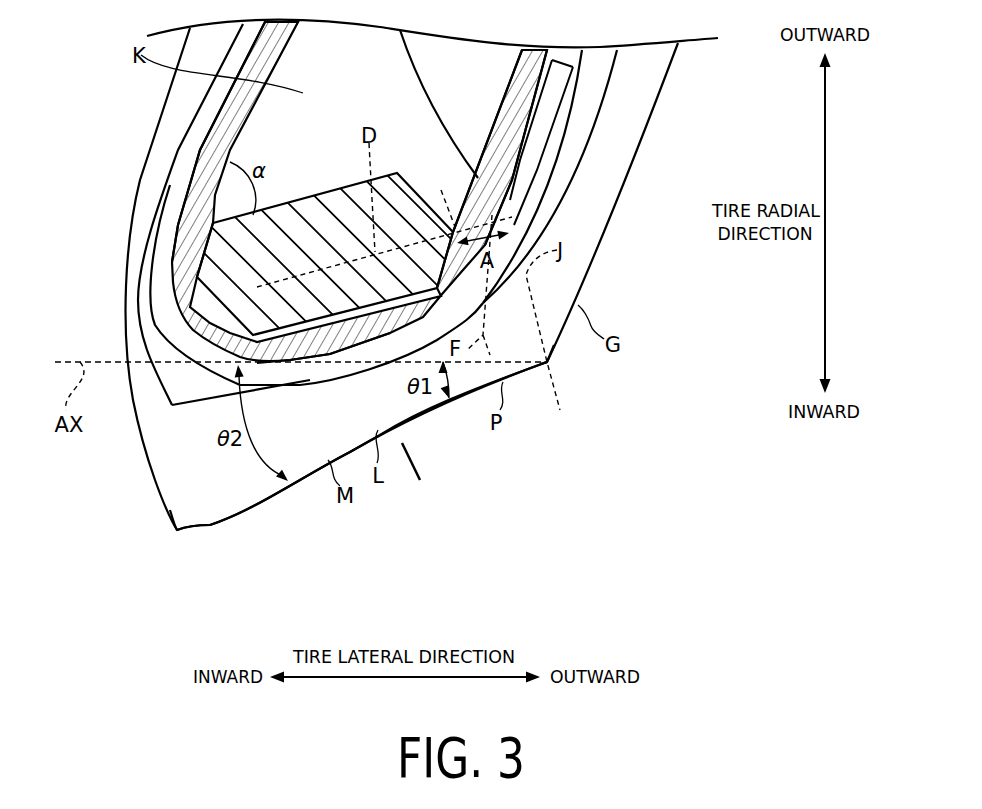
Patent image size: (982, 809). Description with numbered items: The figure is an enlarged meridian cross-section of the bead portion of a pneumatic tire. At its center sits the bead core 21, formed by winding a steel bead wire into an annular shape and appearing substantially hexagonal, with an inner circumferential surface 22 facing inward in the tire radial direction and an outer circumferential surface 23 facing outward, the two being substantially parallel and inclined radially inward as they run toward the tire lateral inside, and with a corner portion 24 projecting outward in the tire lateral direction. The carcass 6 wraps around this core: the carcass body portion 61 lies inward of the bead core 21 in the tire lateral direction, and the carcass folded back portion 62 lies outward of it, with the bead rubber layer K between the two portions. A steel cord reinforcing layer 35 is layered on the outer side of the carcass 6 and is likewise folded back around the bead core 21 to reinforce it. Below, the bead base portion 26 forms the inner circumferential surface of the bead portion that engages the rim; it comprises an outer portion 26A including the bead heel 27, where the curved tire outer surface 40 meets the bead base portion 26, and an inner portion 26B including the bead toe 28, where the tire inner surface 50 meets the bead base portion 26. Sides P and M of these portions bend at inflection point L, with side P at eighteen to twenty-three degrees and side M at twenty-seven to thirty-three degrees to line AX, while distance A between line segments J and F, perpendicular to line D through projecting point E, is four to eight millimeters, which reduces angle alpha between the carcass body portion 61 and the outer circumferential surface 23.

The carcass 6 is at (212, 111).
The carcass body portion 61 is at (220, 147).
The carcass folded back portion 62 is at (513, 143).
The bead core 21 is at (330, 190).
The inner circumferential surface 22 is at (372, 335).
The outer circumferential surface 23 is at (293, 200).
The corner portion 24 is at (441, 188).
The bead base portion 26 is at (533, 477).
The outer portion 26A is at (568, 405).
The inner portion 26B is at (182, 545).
The bead heel 27 is at (550, 363).
The bead toe 28 is at (177, 531).
The steel cord reinforcing layer 35 is at (172, 189).
The tire outer surface 40 is at (598, 252).
The tire inner surface 50 is at (127, 347).